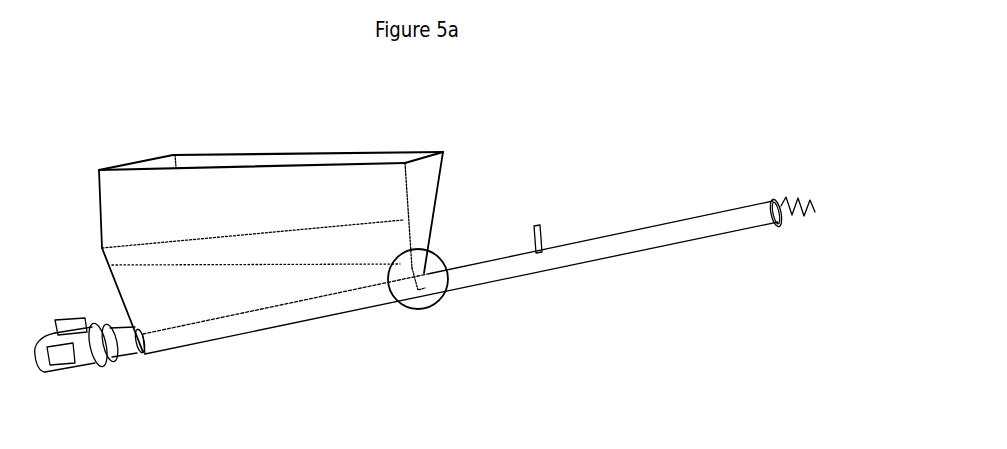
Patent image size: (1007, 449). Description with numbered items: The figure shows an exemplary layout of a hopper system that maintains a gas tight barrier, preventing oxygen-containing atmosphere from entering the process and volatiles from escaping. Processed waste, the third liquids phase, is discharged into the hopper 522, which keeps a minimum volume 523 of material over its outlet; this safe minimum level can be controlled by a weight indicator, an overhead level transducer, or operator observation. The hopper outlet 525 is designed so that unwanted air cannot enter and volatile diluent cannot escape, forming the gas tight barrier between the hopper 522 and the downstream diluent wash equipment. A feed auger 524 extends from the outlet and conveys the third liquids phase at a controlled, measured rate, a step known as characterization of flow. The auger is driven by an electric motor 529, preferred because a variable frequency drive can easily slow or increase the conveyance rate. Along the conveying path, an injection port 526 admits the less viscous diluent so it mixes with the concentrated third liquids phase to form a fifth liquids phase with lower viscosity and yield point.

The hopper 522 is at (443, 173).
The minimum volume 523 is at (297, 267).
The feed auger 524 is at (811, 203).
The hopper outlet 525 is at (432, 308).
The injection port 526 is at (538, 225).
The electric motor 529 is at (85, 365).